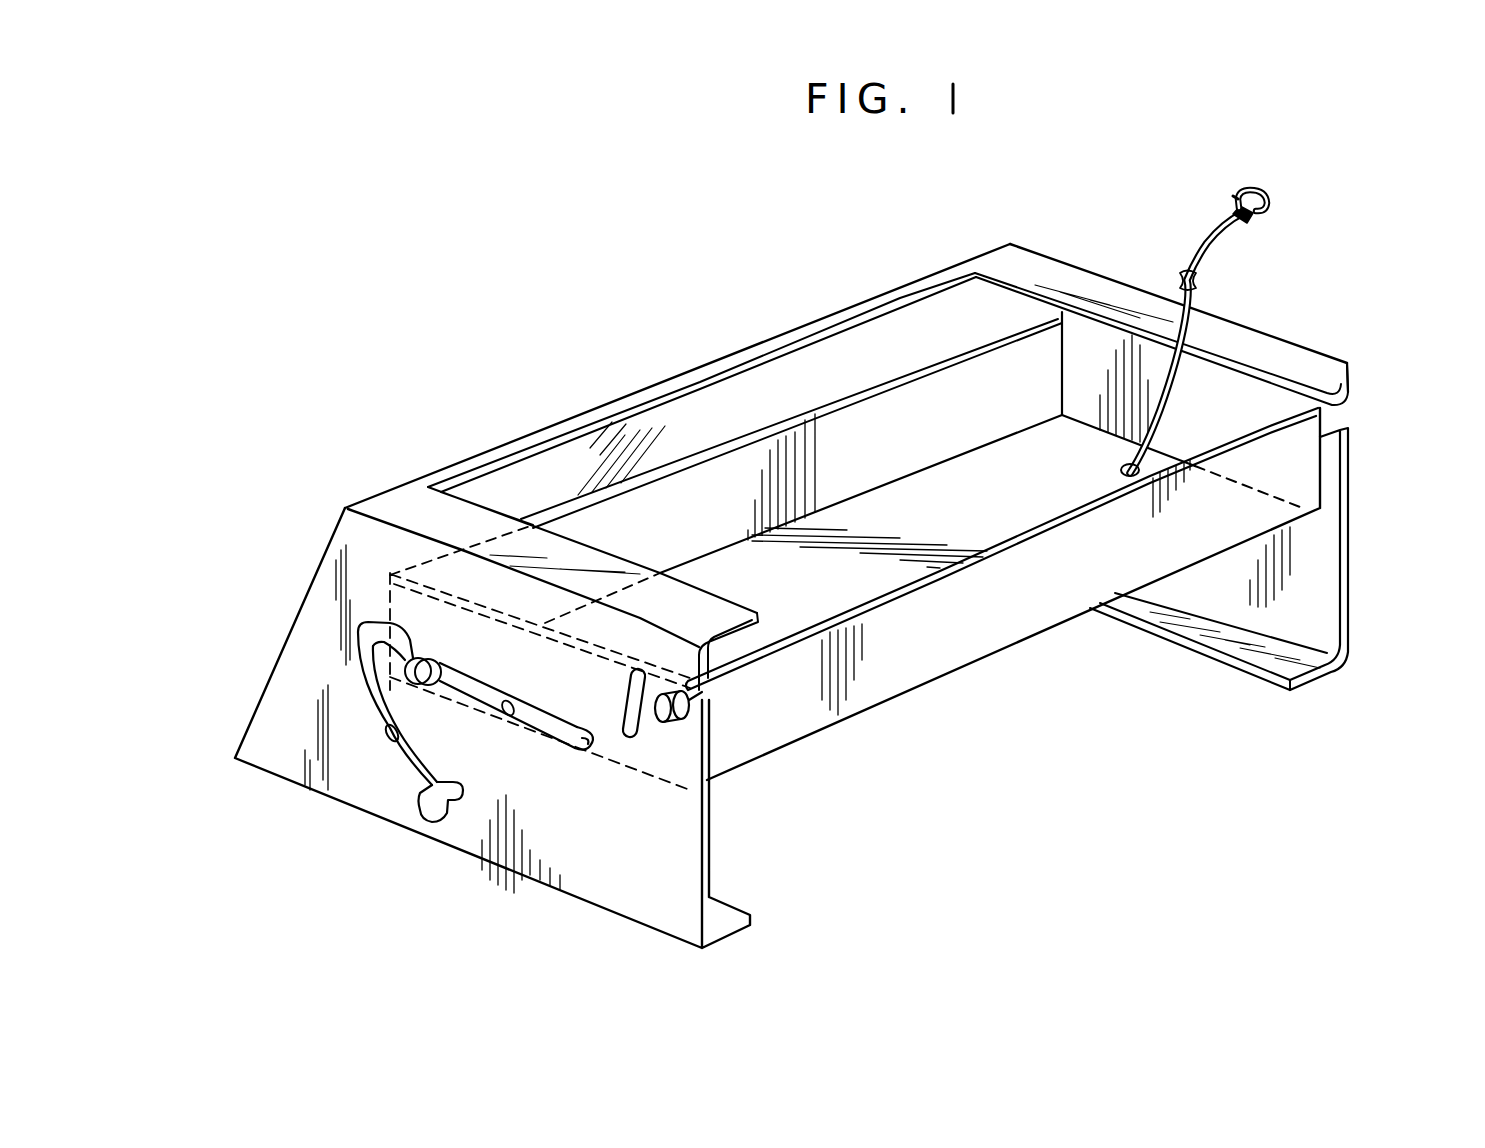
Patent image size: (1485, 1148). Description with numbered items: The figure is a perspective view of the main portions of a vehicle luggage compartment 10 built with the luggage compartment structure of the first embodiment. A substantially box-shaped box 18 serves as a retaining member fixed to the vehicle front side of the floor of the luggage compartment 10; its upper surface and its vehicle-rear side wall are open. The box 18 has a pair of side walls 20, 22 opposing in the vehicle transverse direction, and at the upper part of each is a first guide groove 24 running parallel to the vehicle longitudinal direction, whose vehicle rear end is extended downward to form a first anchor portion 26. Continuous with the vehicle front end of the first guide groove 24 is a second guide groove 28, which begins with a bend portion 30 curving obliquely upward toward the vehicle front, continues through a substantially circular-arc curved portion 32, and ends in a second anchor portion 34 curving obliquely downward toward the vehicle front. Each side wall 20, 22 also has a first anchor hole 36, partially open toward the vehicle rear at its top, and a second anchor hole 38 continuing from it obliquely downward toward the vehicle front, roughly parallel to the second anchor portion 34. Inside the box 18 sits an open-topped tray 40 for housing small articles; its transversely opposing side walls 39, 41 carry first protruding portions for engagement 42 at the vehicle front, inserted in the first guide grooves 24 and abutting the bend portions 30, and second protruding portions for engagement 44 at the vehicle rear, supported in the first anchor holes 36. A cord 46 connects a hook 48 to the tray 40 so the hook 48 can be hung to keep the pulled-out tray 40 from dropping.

The vehicle luggage compartment 10 is at (693, 243).
The box 18 is at (1081, 250).
The side wall 20 is at (350, 526).
The side wall 22 is at (1283, 340).
The first guide groove 24 is at (507, 717).
The first anchor portion 26 is at (594, 745).
The second guide groove 28 is at (360, 722).
The bend portion 30 is at (360, 626).
The curved portion 32 is at (393, 747).
The second anchor portion 34 is at (450, 812).
The first anchor hole 36 is at (699, 702).
The second anchor hole 38 is at (633, 750).
The side wall 39 is at (390, 574).
The tray 40 is at (983, 658).
The side wall 41 is at (1340, 381).
The first protruding portion for engagement 42 is at (428, 660).
The second protruding portion for engagement 44 is at (672, 728).
The cord 46 is at (1212, 240).
The hook 48 is at (1270, 197).